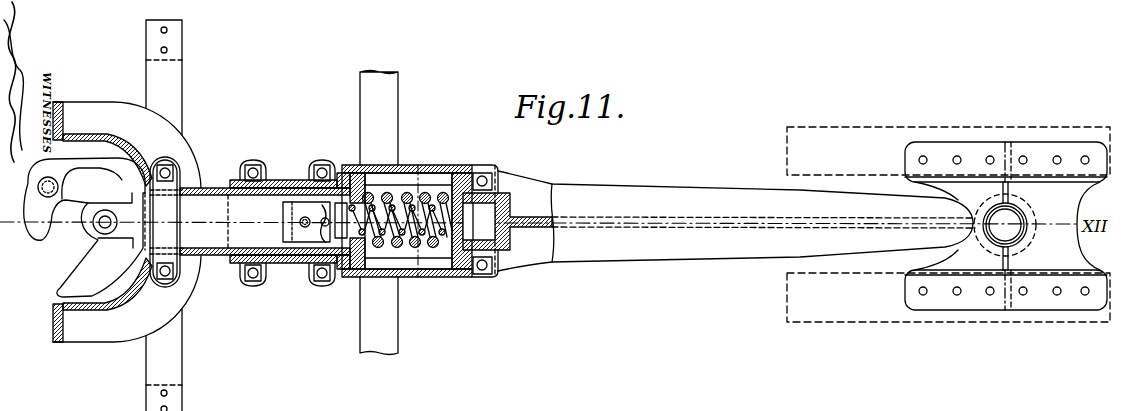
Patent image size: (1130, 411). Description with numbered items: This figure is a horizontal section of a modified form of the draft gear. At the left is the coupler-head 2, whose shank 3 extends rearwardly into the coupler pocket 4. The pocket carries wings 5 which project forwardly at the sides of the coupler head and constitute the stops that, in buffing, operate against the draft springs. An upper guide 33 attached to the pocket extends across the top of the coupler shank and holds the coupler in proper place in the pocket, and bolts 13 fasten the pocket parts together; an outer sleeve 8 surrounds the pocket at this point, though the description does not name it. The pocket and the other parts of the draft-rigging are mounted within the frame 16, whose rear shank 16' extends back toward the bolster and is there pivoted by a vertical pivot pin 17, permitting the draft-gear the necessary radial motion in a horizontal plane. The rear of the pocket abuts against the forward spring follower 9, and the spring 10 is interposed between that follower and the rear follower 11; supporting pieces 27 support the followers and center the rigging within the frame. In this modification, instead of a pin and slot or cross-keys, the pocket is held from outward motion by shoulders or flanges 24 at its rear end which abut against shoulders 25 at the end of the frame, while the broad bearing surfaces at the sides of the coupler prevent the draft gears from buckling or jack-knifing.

The coupler-head 2 is at (84, 227).
The shank 3 is at (287, 221).
The coupler pocket 4 is at (206, 190).
The wings 5 is at (127, 222).
The sleeve 8 is at (283, 224).
The forward spring follower 9 is at (353, 268).
The spring 10 is at (436, 248).
The rear follower 11 is at (444, 248).
The bolts 13 is at (305, 216).
The frame 16 is at (497, 209).
The rear shank 16' is at (736, 221).
The vertical pivot pin 17 is at (1012, 230).
The shoulders or flanges 24 is at (353, 172).
The shoulders 25 is at (347, 178).
The supporting pieces 27 is at (401, 180).
The upper guide 33 is at (166, 222).